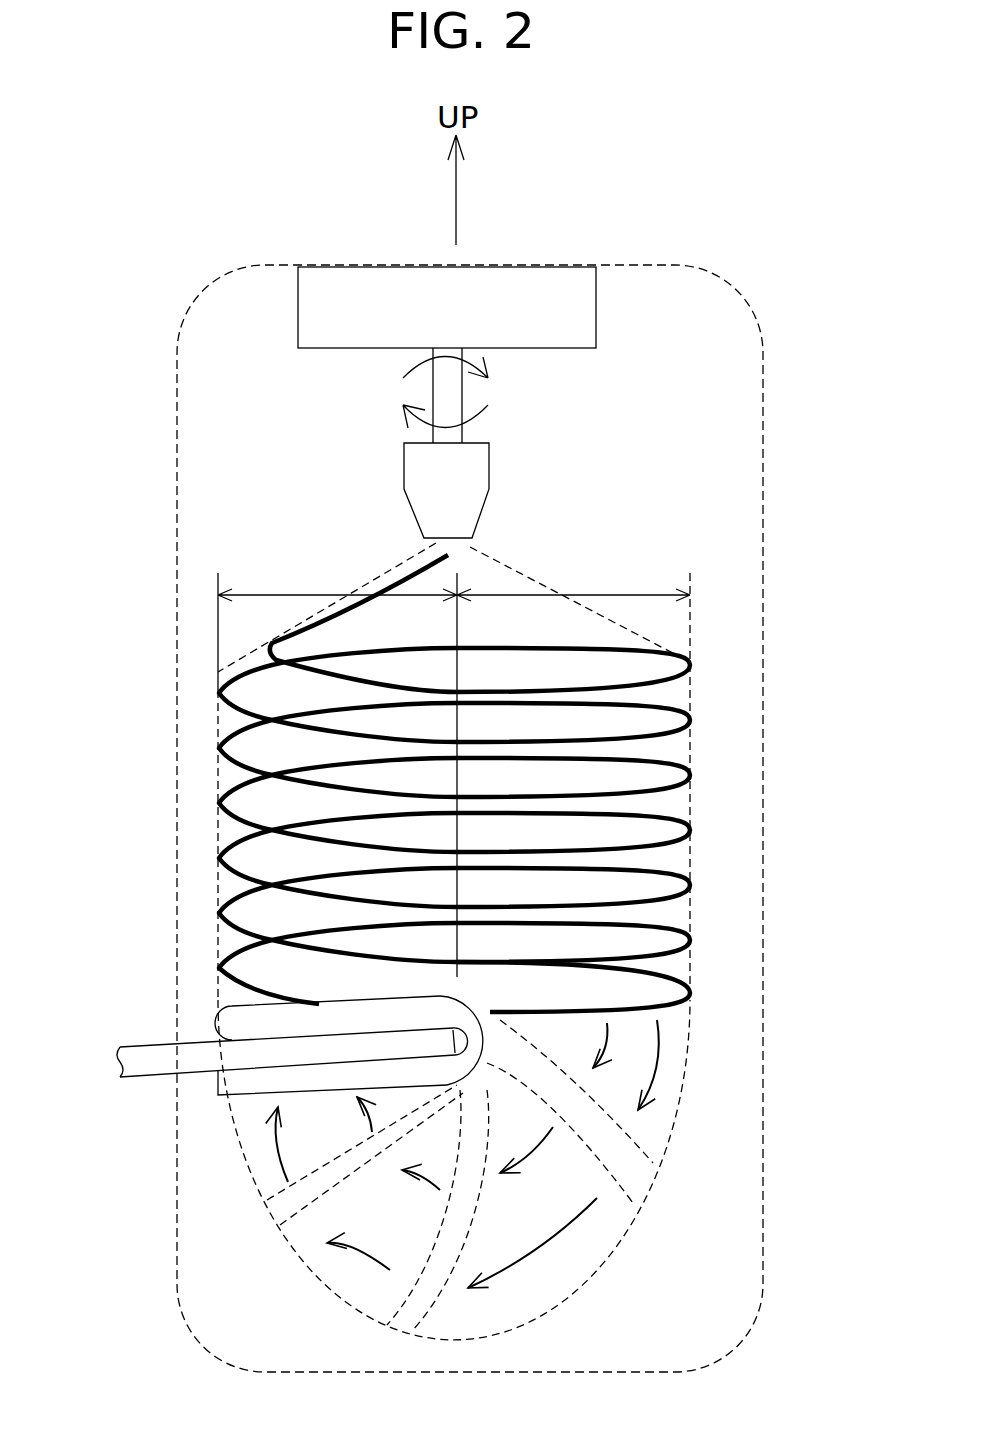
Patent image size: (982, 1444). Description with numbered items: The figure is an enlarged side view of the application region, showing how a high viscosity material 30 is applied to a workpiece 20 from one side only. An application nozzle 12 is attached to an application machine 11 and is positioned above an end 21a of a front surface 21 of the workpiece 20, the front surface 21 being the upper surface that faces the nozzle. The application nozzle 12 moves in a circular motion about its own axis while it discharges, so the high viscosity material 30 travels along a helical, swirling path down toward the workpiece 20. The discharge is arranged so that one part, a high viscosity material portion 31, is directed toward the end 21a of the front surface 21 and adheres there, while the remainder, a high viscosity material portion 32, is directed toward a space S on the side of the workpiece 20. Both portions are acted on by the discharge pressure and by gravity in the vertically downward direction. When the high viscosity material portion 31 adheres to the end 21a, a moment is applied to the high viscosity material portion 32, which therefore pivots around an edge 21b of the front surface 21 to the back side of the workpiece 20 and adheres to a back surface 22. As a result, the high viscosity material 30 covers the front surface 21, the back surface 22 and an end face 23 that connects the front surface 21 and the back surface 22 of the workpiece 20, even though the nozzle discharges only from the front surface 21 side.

The application machine 11 is at (573, 320).
The application nozzle 12 is at (472, 467).
The workpiece 20 is at (145, 1047).
The front surface 21 is at (341, 1014).
The end of the front surface 21a is at (435, 1025).
The edge of the front surface 21b is at (453, 1035).
The back surface 22 is at (202, 1073).
The end face 23 is at (462, 1043).
The high viscosity material 30 is at (247, 1015).
The high viscosity material portion 31 is at (288, 594).
The high viscosity material portion 32 is at (607, 593).
The space S is at (567, 1040).